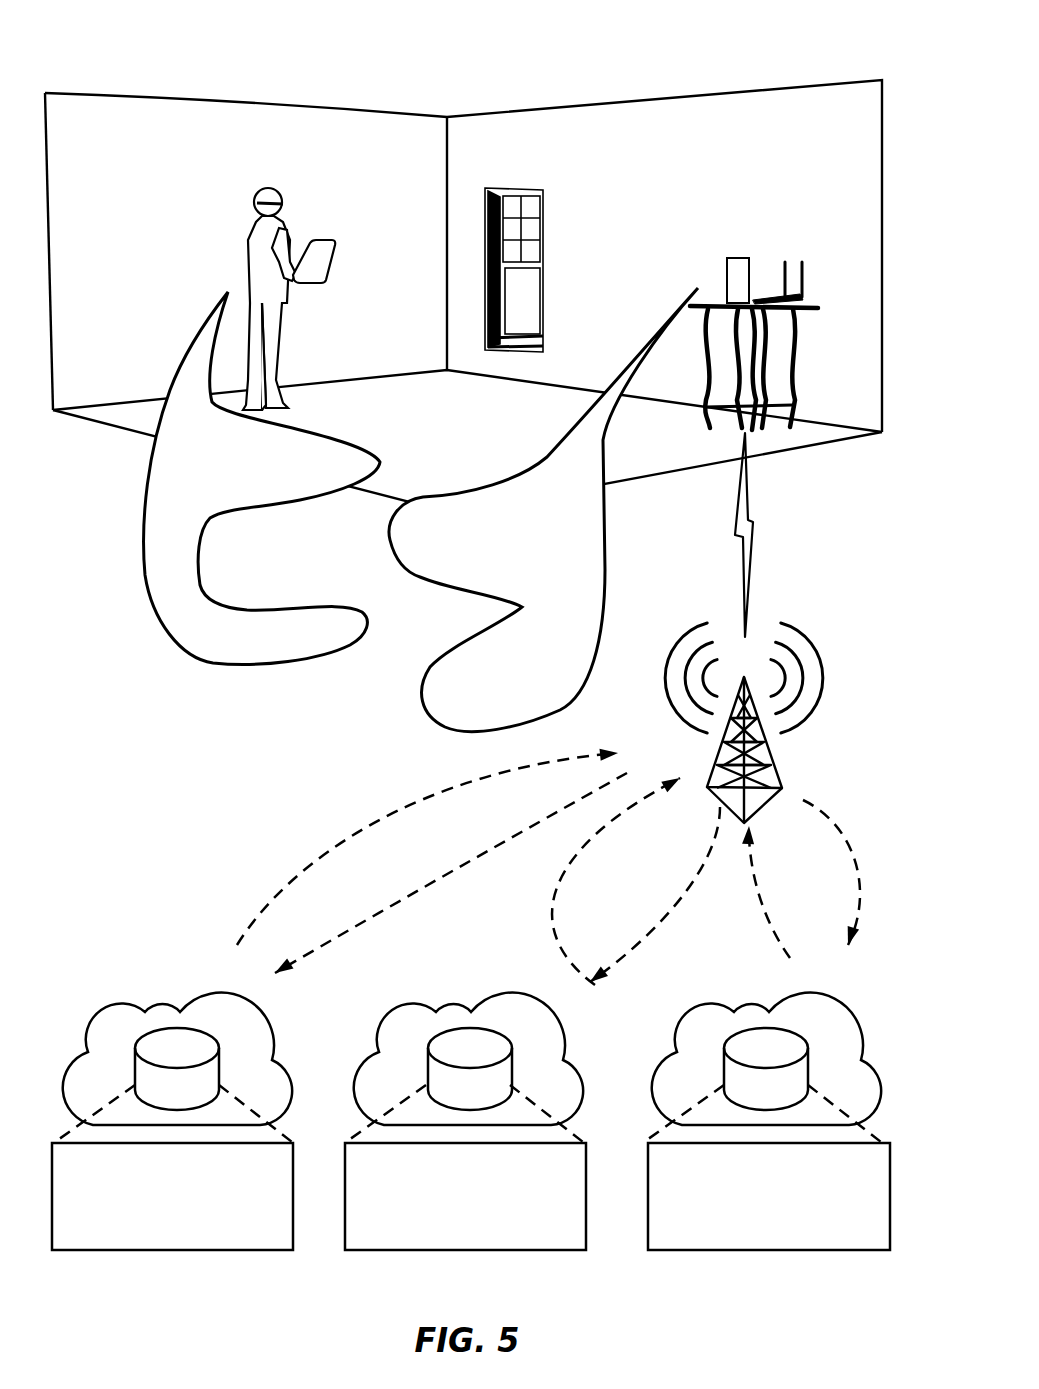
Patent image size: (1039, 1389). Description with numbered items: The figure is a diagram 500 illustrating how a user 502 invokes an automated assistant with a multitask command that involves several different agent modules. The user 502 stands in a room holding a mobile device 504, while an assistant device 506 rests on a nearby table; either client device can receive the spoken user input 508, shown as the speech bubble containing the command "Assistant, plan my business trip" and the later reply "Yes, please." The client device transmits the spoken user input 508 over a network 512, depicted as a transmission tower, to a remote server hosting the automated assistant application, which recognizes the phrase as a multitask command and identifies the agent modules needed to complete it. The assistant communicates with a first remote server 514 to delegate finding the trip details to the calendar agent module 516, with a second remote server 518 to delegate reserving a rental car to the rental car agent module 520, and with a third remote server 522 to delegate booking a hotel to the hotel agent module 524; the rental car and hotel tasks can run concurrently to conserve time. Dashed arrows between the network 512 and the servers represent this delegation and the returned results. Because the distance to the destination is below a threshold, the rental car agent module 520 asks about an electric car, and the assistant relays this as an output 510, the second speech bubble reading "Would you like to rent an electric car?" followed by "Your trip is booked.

The diagram 500 is at (132, 90).
The user 502 is at (245, 283).
The mobile device 504 is at (334, 243).
The assistant device 506 is at (727, 258).
The spoken user input 508 is at (208, 663).
The output 510 is at (458, 727).
The network 512 is at (727, 742).
The first remote server 514 is at (159, 1097).
The calendar agent module 516 is at (154, 1237).
The second remote server 518 is at (452, 1097).
The rental car agent module 520 is at (447, 1237).
The third remote server 522 is at (748, 1097).
The hotel agent module 524 is at (751, 1237).